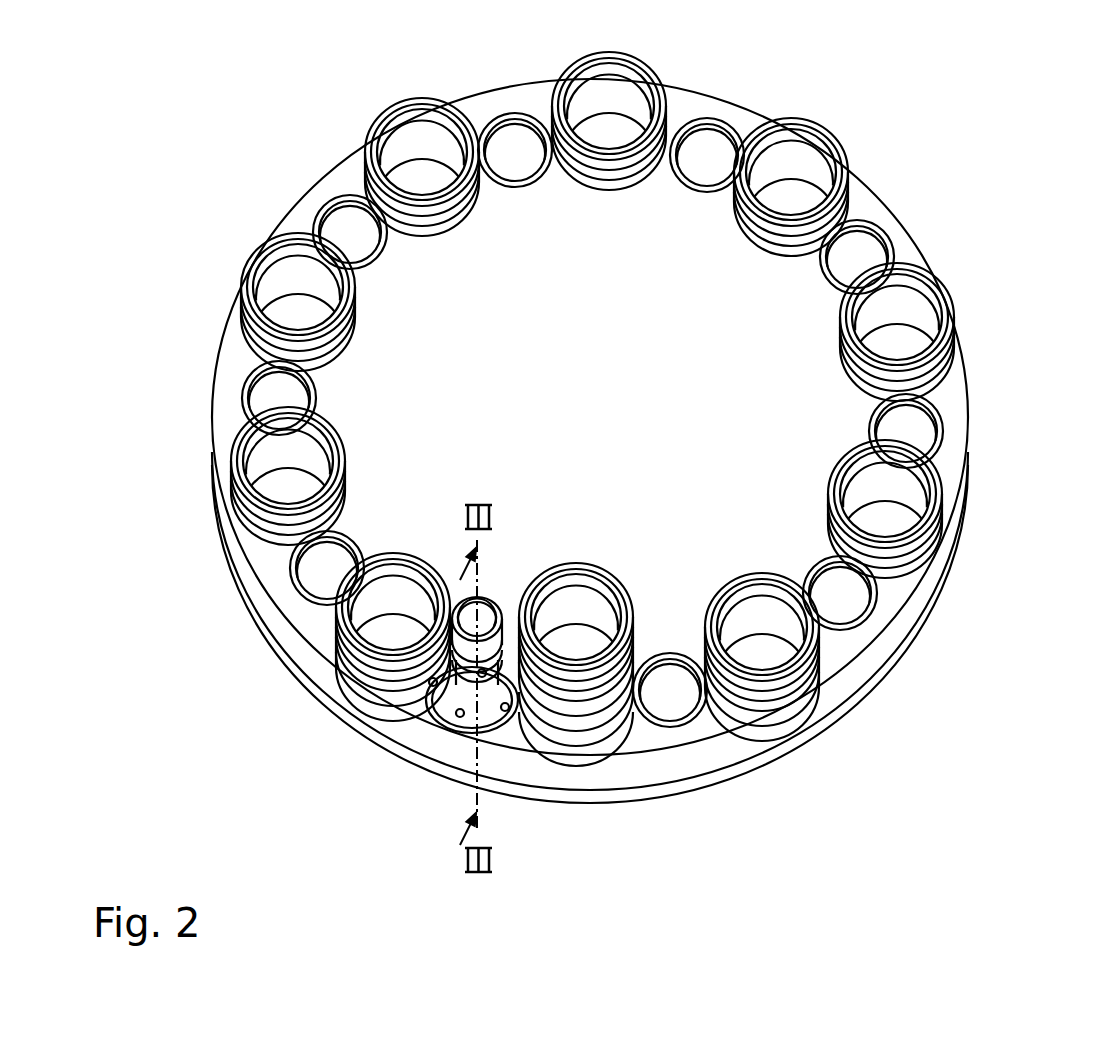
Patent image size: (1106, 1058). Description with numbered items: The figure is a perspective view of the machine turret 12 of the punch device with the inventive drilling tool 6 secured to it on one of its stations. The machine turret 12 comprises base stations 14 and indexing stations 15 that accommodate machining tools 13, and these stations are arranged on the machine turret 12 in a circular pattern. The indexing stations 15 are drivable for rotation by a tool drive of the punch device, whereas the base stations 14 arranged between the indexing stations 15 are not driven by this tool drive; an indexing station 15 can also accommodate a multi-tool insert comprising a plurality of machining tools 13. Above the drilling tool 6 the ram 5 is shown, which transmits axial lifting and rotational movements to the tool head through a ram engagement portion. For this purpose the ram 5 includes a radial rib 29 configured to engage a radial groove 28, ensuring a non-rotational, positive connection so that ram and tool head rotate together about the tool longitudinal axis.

The machine turret 12 is at (417, 393).
The indexing stations 15 is at (220, 457).
The base stations 14 is at (282, 571).
The radial groove 28 is at (572, 680).
The ram 5 is at (463, 612).
The radial rib 29 is at (477, 650).
The drilling tool 6 is at (462, 693).
The machining tools 13 is at (444, 792).